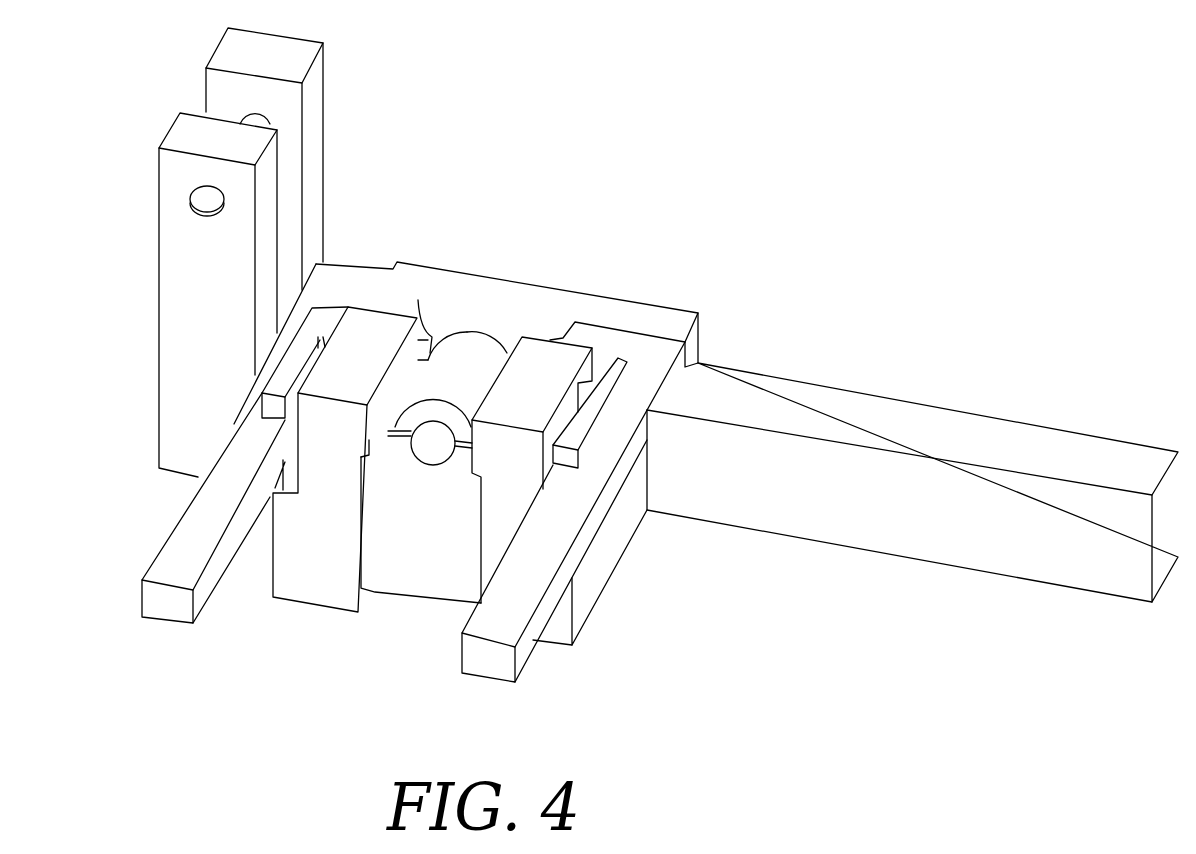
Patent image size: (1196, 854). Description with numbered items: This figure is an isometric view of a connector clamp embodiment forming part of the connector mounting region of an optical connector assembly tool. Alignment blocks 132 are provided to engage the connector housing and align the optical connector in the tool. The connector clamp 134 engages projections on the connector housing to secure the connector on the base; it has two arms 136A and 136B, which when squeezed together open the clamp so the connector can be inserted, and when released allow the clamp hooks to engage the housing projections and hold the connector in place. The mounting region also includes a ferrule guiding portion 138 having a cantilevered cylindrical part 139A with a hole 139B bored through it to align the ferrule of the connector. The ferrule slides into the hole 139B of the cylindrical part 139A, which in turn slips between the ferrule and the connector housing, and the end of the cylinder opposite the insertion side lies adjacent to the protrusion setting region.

The alignment blocks 132 is at (517, 417).
The connector clamp 134 is at (570, 483).
The arm 136A is at (507, 618).
The arm 136B is at (180, 542).
The ferrule guiding portion 138 is at (470, 353).
The cantilevered cylindrical part 139A is at (495, 352).
The hole 139B is at (432, 458).